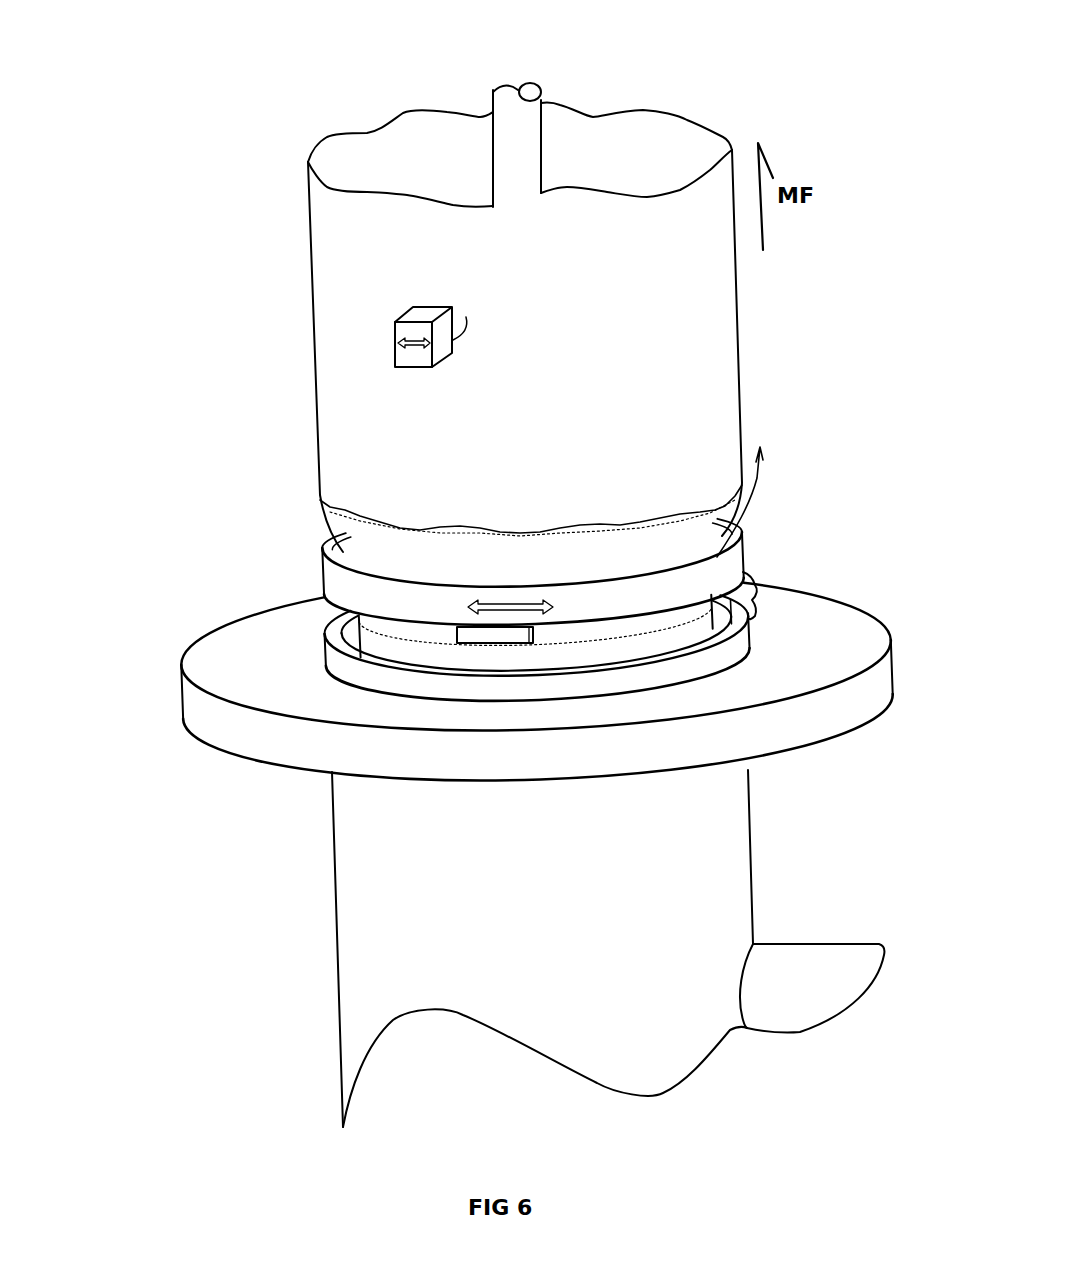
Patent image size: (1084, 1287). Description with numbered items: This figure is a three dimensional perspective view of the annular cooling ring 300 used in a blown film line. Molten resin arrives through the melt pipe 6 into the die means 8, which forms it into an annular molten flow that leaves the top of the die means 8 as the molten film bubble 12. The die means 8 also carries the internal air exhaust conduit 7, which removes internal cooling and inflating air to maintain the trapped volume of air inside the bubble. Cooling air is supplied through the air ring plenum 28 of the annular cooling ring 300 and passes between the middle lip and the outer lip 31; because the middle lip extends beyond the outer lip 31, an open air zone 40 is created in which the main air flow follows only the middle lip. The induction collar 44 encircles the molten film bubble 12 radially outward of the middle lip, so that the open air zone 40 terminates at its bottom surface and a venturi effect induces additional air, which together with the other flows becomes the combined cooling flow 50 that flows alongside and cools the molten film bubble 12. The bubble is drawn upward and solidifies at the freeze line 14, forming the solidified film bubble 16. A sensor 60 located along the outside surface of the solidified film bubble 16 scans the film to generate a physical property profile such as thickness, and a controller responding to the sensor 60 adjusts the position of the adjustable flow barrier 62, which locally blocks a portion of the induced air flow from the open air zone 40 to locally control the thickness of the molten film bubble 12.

The internal air exhaust conduit 7 is at (490, 103).
The solidified film bubble 16 is at (315, 320).
The sensor 60 is at (398, 330).
The freeze line 14 is at (348, 508).
The molten film bubble 12 is at (327, 525).
The combined cooling flow 50 is at (757, 472).
The induction collar 44 is at (733, 563).
The open air zone 40 is at (755, 599).
The outer lip 31 is at (733, 648).
The adjustable flow barrier 62 is at (495, 635).
The air ring plenum 28 is at (223, 652).
The die means 8 is at (425, 986).
The melt pipe 6 is at (791, 970).
The annular cooling ring 300 is at (193, 563).